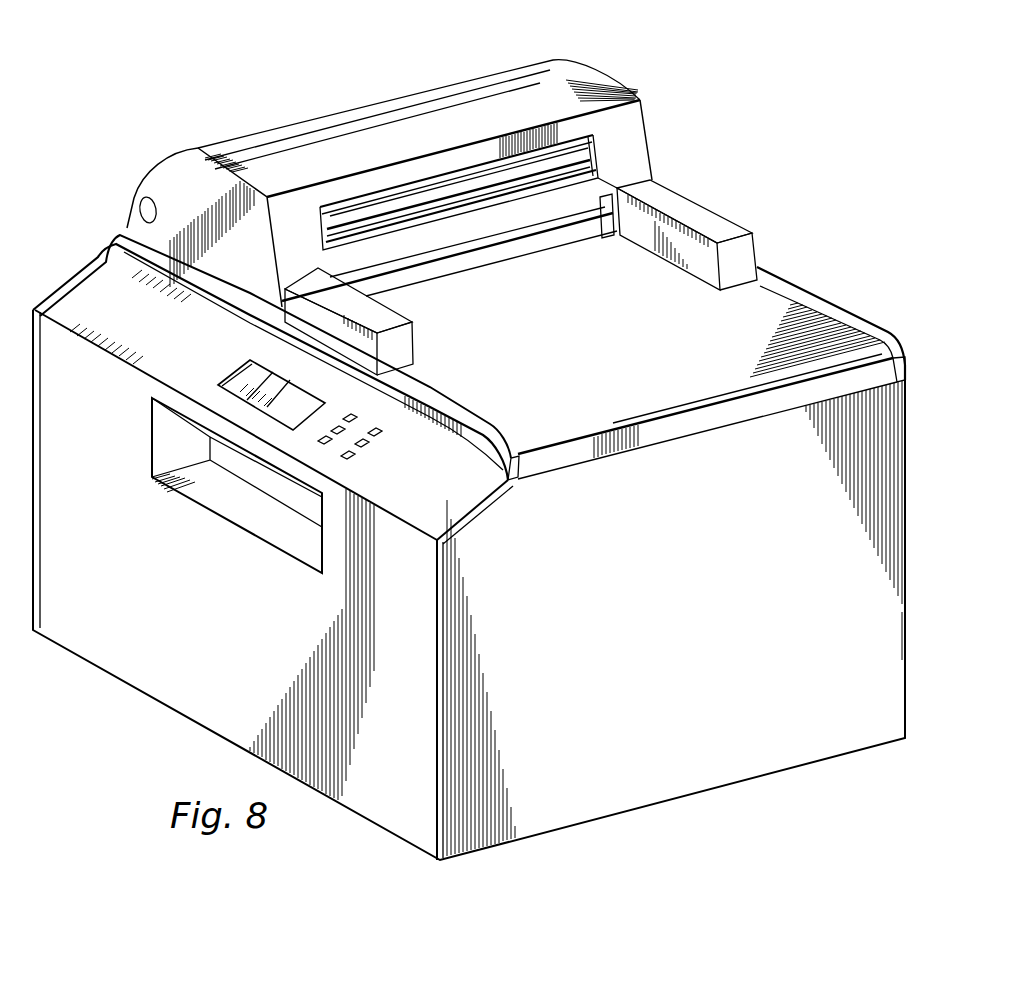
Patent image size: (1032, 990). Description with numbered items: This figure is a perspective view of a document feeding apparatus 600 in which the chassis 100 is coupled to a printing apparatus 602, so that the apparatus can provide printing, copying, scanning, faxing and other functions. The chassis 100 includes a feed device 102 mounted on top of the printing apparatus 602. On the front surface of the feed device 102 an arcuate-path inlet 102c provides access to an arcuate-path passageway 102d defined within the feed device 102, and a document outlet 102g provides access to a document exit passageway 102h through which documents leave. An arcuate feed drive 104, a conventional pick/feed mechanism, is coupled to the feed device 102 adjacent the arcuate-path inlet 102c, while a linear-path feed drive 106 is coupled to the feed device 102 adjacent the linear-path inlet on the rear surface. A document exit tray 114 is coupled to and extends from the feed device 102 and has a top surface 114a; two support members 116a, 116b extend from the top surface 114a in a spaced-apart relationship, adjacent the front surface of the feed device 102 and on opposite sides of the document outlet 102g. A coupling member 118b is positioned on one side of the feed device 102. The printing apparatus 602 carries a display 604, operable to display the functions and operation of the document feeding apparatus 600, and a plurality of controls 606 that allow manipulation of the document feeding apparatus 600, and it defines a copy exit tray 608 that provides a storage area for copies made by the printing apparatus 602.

The chassis 100 is at (338, 96).
The feed device 102 is at (460, 88).
The arcuate-path inlet 102c is at (428, 183).
The arcuate-path passageway 102d is at (521, 171).
The document outlet 102g is at (477, 231).
The document exit passageway 102h is at (414, 268).
The arcuate feed drive 104 is at (538, 160).
The linear-path feed drive 106 is at (617, 185).
The document exit tray 114 is at (688, 428).
The top surface 114a is at (663, 374).
The support member 116a is at (405, 350).
The support member 116b is at (700, 217).
The coupling member 118b is at (143, 211).
The document feeding apparatus 600 is at (827, 266).
The printing apparatus 602 is at (774, 748).
The display 604 is at (240, 382).
The controls 606 is at (384, 438).
The copy exit tray 608 is at (262, 522).